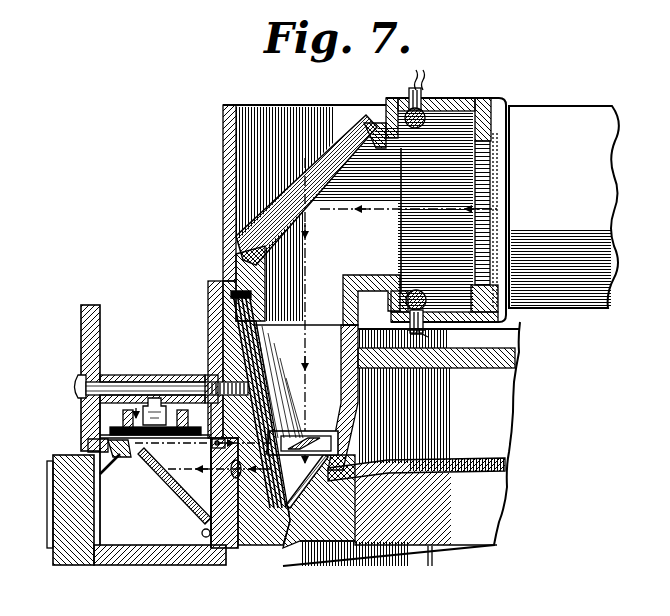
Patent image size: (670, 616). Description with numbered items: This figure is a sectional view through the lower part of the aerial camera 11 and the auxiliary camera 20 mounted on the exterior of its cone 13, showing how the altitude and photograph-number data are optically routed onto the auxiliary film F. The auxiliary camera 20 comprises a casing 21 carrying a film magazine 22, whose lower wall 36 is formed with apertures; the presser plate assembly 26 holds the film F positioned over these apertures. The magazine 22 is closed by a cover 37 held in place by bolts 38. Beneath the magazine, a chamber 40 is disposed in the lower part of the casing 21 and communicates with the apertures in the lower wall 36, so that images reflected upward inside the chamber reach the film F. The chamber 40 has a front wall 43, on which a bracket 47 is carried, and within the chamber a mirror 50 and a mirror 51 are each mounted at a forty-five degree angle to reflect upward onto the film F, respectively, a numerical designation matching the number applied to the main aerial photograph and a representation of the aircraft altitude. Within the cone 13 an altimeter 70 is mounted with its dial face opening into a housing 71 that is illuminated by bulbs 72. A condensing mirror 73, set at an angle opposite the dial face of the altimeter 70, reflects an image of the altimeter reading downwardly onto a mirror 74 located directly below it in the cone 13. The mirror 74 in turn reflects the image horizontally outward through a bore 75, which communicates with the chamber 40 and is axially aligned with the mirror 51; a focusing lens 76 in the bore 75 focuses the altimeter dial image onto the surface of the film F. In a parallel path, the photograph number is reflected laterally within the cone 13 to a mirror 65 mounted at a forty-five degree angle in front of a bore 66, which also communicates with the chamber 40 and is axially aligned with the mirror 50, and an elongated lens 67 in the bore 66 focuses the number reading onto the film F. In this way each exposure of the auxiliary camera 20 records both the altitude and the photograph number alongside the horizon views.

The aerial camera 11 is at (212, 183).
The cone 13 is at (316, 558).
The auxiliary camera 20 is at (133, 563).
The casing 21 is at (178, 560).
The film magazine 22 is at (200, 286).
The presser plate assembly 26 is at (138, 392).
The lower wall 36 is at (190, 427).
The cover 37 is at (73, 320).
The bolts 38 is at (65, 376).
The chamber 40 is at (143, 537).
The front wall 43 is at (77, 441).
The bracket 47 is at (45, 486).
The mirror 50 is at (115, 449).
The mirror 51 is at (160, 468).
The mirror 65 is at (318, 423).
The bore 66 is at (275, 423).
The elongated lens 67 is at (204, 438).
The altimeter 70 is at (540, 98).
The housing 71 is at (384, 90).
The bulbs 72 is at (425, 100).
The condensing mirror 73 is at (322, 172).
The mirror 74 is at (298, 480).
The bore 75 is at (250, 470).
The focusing lens 76 is at (222, 462).
The film F is at (104, 421).